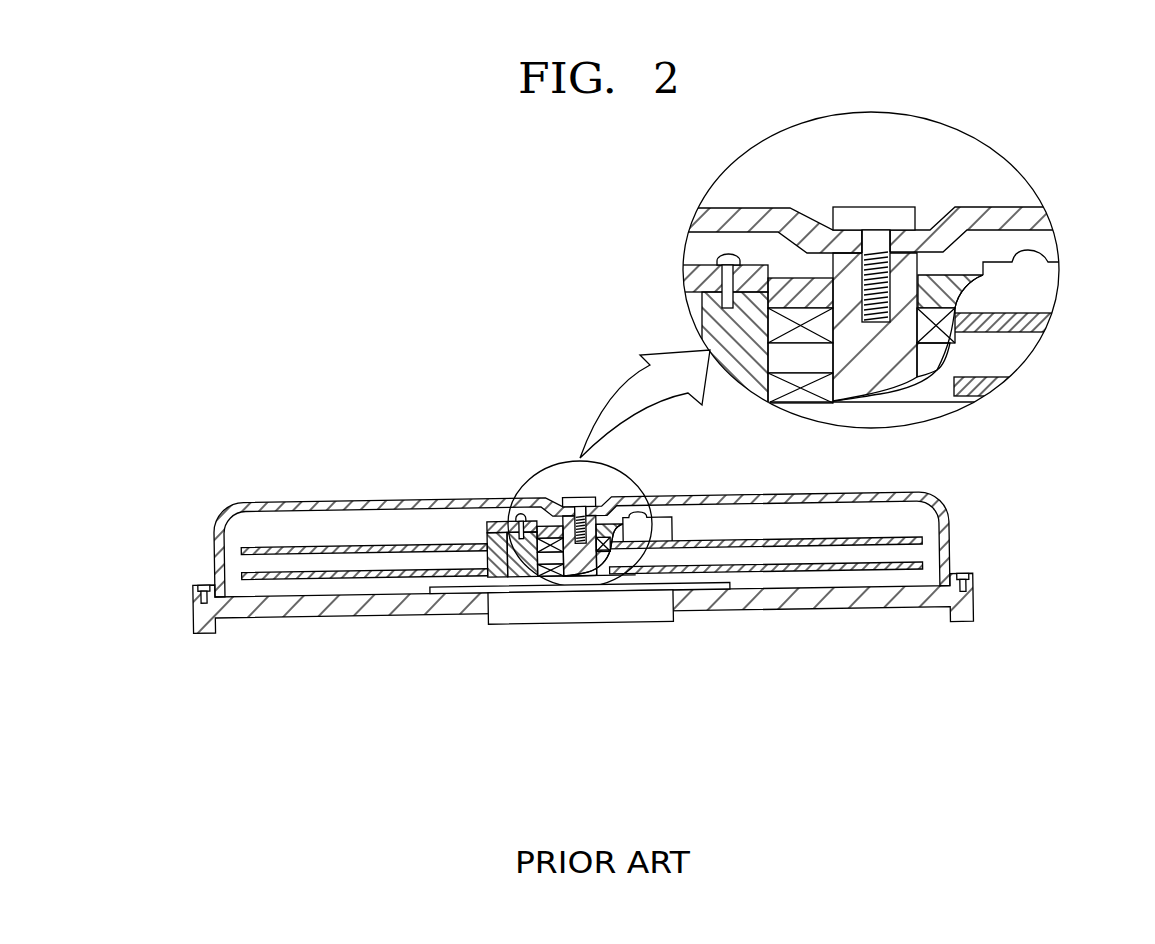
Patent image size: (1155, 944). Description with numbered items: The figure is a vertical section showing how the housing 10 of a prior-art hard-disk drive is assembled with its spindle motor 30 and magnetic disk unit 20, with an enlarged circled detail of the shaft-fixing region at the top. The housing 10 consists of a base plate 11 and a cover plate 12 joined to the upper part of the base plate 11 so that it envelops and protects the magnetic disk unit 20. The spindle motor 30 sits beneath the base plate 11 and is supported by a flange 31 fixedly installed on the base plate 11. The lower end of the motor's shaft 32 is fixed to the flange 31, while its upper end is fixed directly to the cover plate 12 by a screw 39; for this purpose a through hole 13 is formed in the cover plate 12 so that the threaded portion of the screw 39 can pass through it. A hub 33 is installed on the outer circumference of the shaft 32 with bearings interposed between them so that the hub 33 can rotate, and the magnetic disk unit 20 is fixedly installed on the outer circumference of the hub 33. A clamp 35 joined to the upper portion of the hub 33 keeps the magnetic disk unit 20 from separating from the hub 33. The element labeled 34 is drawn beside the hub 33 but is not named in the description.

The housing 10 is at (668, 418).
The base plate 11 is at (965, 604).
The cover plate 12 is at (941, 531).
The through hole 13 is at (882, 216).
The magnetic disk unit 20 is at (343, 553).
The spindle motor 30 is at (621, 634).
The flange 31 is at (466, 595).
The shaft 32 is at (903, 353).
The hub 33 is at (521, 578).
The bracket 34 is at (490, 540).
The clamp 35 is at (499, 521).
The screw 39 is at (853, 213).